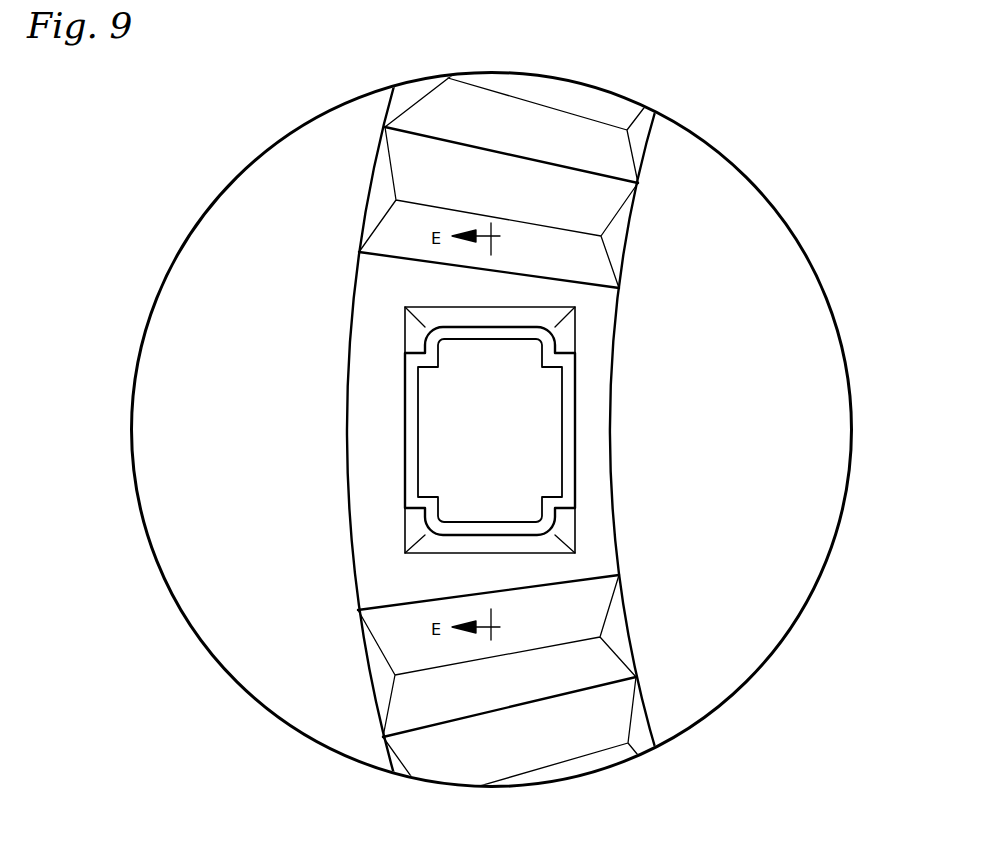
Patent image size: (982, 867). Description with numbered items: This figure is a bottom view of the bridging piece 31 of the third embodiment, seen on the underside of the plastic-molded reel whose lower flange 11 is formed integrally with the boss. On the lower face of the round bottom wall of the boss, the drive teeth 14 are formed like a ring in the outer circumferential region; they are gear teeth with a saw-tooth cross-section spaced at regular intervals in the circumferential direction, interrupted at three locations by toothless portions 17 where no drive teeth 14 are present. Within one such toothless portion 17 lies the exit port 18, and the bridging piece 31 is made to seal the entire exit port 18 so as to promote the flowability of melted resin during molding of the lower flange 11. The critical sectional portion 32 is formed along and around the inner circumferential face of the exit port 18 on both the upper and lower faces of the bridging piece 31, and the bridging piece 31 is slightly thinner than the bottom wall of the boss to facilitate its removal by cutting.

The lower flange 11 is at (208, 575).
The drive teeth 14 is at (593, 205).
The toothless portions 17 is at (363, 525).
The exit port 18 is at (573, 406).
The bridging piece 31 is at (440, 407).
The critical sectional portion 32 is at (410, 444).